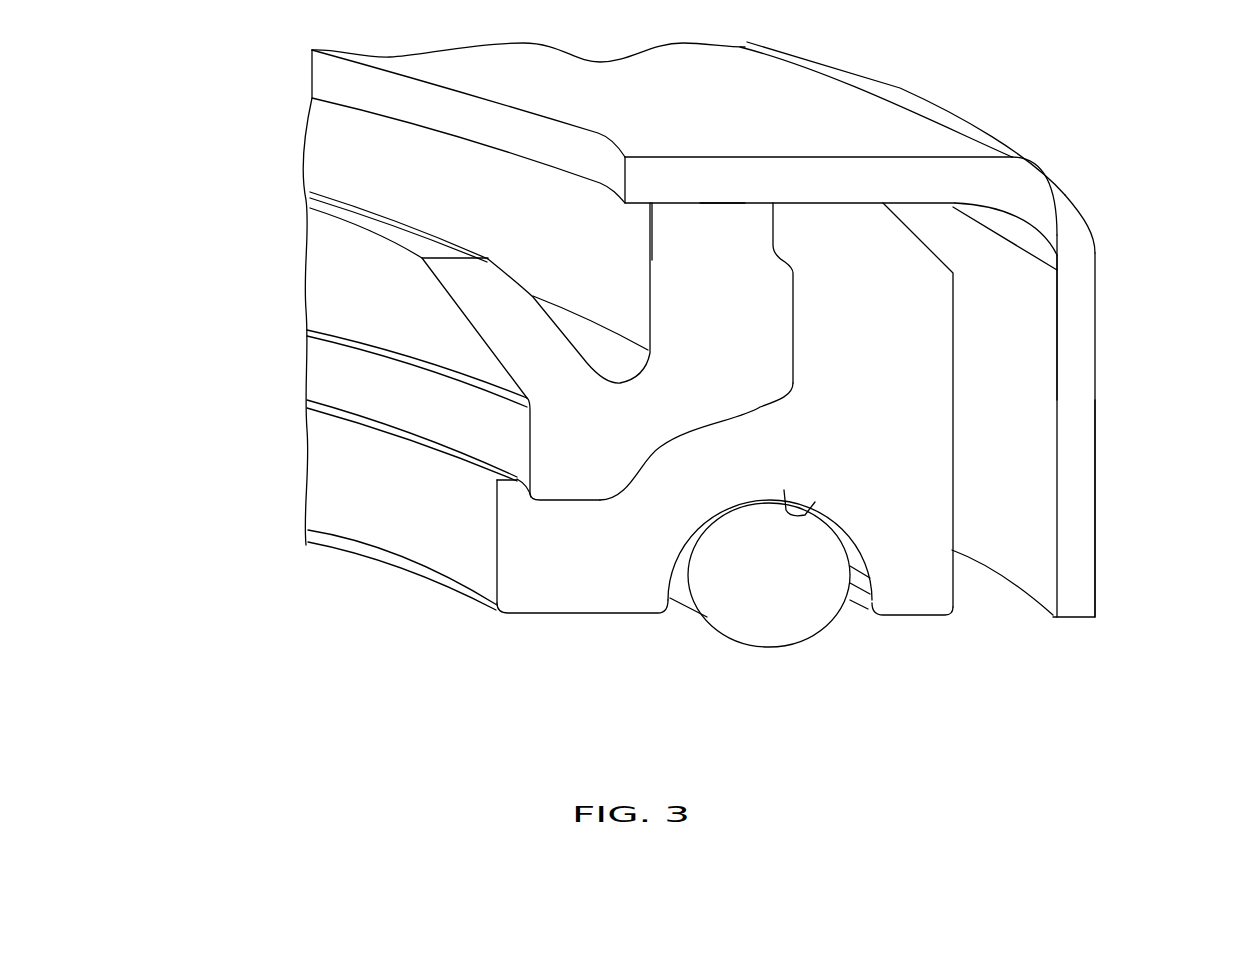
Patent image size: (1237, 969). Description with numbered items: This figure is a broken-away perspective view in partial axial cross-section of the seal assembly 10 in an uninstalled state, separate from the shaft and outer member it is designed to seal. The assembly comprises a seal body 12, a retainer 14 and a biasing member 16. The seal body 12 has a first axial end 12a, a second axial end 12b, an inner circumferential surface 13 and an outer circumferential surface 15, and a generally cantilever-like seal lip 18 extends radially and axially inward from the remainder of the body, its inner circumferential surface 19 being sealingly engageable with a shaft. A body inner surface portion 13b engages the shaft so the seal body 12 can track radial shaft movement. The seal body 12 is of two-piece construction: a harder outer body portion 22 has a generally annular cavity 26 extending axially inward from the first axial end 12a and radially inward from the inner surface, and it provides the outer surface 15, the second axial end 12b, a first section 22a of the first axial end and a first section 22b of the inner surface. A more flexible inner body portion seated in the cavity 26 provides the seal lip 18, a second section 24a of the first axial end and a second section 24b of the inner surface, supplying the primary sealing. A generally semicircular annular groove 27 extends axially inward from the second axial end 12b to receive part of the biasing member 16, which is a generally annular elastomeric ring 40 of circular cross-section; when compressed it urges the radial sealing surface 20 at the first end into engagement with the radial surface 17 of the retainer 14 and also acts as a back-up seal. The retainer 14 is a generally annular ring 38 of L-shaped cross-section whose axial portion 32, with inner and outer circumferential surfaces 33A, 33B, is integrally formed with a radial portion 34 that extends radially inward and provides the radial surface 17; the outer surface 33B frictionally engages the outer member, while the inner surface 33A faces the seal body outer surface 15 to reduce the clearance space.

The seal assembly 10 is at (348, 670).
The seal body 12 is at (222, 227).
The first axial end 12a is at (698, 200).
The second axial end 12b is at (617, 618).
The inner circumferential surface 13 is at (323, 382).
The body inner surface portion 13b is at (322, 482).
The retainer 14 is at (1097, 183).
The outer circumferential surface 15 is at (962, 323).
The biasing member 16 is at (805, 667).
The radial surface 17 is at (847, 207).
The seal lip 18 is at (338, 197).
The inner circumferential surface of seal lip 19 is at (348, 221).
The radial sealing surface 20 is at (750, 200).
The outer body portion 22 is at (380, 323).
The first section of first axial end 22a is at (810, 203).
The first section of body inner surface 22b is at (332, 435).
The second section of first axial end 24a is at (723, 203).
The second section of body inner surface 24b is at (333, 283).
The annular cavity 26 is at (770, 398).
The annular groove 27 is at (815, 502).
The axial portion 32 is at (1097, 430).
The inner circumferential surface of retainer axial portion 33A is at (1020, 370).
The outer circumferential surface of retainer axial portion 33B is at (1097, 518).
The radial portion 34 is at (813, 103).
The annular ring 38 is at (1015, 143).
The elastomeric ring 40 is at (750, 628).